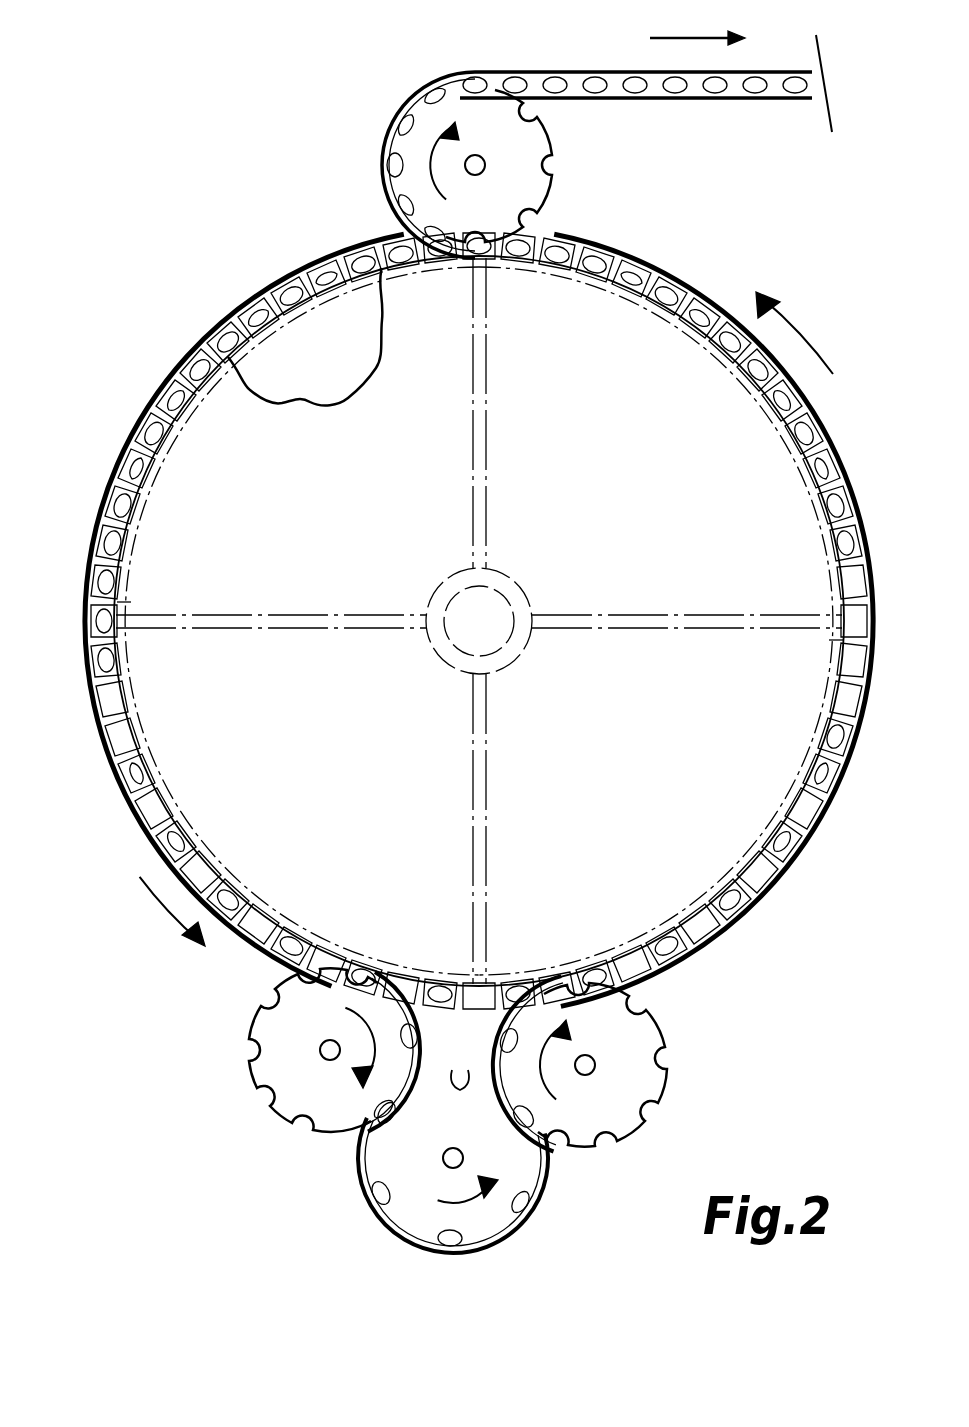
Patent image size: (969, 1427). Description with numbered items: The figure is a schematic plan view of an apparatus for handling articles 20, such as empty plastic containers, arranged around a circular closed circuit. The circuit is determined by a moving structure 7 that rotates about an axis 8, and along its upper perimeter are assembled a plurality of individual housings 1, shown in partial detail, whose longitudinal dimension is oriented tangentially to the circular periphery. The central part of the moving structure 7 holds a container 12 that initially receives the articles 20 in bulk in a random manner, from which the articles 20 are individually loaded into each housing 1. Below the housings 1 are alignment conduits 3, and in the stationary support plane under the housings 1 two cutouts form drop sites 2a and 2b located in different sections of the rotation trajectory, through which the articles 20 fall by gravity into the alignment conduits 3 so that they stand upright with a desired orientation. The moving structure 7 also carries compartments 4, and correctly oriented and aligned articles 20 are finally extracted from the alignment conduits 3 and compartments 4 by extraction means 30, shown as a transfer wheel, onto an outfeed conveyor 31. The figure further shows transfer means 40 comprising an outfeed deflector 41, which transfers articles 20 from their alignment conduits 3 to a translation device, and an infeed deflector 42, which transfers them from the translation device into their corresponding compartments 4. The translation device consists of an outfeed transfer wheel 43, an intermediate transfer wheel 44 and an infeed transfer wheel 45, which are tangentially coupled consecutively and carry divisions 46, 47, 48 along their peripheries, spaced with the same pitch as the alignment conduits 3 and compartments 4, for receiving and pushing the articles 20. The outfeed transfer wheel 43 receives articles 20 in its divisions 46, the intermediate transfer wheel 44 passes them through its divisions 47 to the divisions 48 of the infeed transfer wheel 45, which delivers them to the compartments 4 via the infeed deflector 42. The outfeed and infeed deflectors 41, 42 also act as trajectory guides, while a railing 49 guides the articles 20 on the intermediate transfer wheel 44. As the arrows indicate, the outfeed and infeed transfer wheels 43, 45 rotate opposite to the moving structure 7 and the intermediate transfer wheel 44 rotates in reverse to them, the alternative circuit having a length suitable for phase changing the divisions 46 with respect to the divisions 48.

The housing 1 is at (240, 305).
The drop site 2a is at (165, 470).
The drop site 2b is at (806, 742).
The alignment conduit 3 is at (162, 412).
The compartment 4 is at (112, 465).
The moving structure 7 is at (738, 612).
The axis 8 is at (482, 600).
The container 12 is at (372, 358).
The article 20 is at (682, 96).
The extraction means 30 is at (566, 166).
The outfeed conveyor 31 is at (625, 70).
The transfer means 40 is at (457, 1099).
The outfeed deflector 41 is at (415, 985).
The infeed deflector 42 is at (512, 985).
The outfeed transfer wheel 43 is at (278, 1100).
The intermediate transfer wheel 44 is at (510, 1225).
The infeed transfer wheel 45 is at (652, 1050).
The divisions 46 is at (256, 1060).
The divisions 47 is at (460, 1068).
The divisions 48 is at (655, 1095).
The railing 49 is at (550, 1175).